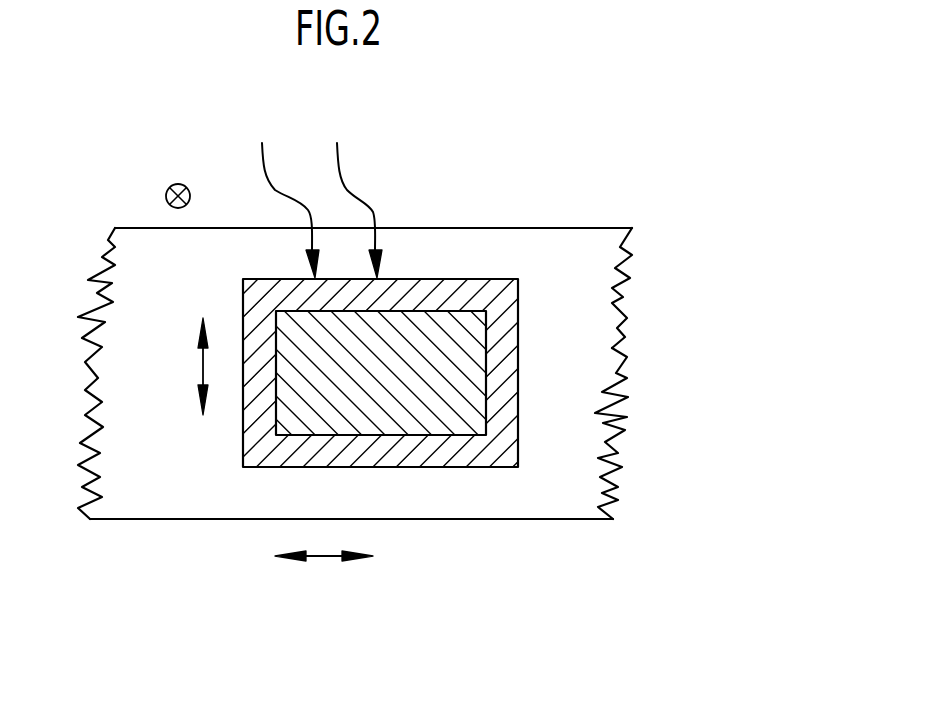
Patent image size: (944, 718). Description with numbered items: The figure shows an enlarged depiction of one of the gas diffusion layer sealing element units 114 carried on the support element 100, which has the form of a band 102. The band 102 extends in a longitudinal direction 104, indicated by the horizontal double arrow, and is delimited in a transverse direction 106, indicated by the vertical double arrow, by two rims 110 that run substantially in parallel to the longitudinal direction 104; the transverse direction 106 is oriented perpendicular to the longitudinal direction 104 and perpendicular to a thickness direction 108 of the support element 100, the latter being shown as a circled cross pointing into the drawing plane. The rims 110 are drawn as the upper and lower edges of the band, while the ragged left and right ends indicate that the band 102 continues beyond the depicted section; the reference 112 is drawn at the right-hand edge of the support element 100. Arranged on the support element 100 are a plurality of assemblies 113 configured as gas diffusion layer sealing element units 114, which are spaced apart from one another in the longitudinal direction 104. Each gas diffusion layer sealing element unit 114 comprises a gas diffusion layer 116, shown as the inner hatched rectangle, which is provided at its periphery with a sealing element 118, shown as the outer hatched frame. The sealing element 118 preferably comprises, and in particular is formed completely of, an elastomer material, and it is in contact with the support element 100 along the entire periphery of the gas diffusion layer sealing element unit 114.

The support element 100 is at (408, 376).
The band 102 is at (592, 298).
The longitudinal direction 104 is at (323, 556).
The transverse direction 106 is at (199, 368).
The thickness direction 108 is at (178, 184).
The rims 110 is at (530, 228).
The second layer 112 is at (588, 355).
The assembly 113 is at (348, 195).
The gas diffusion layer sealing element unit 114 is at (279, 195).
The gas diffusion layer 116 is at (412, 405).
The sealing element 118 is at (445, 298).